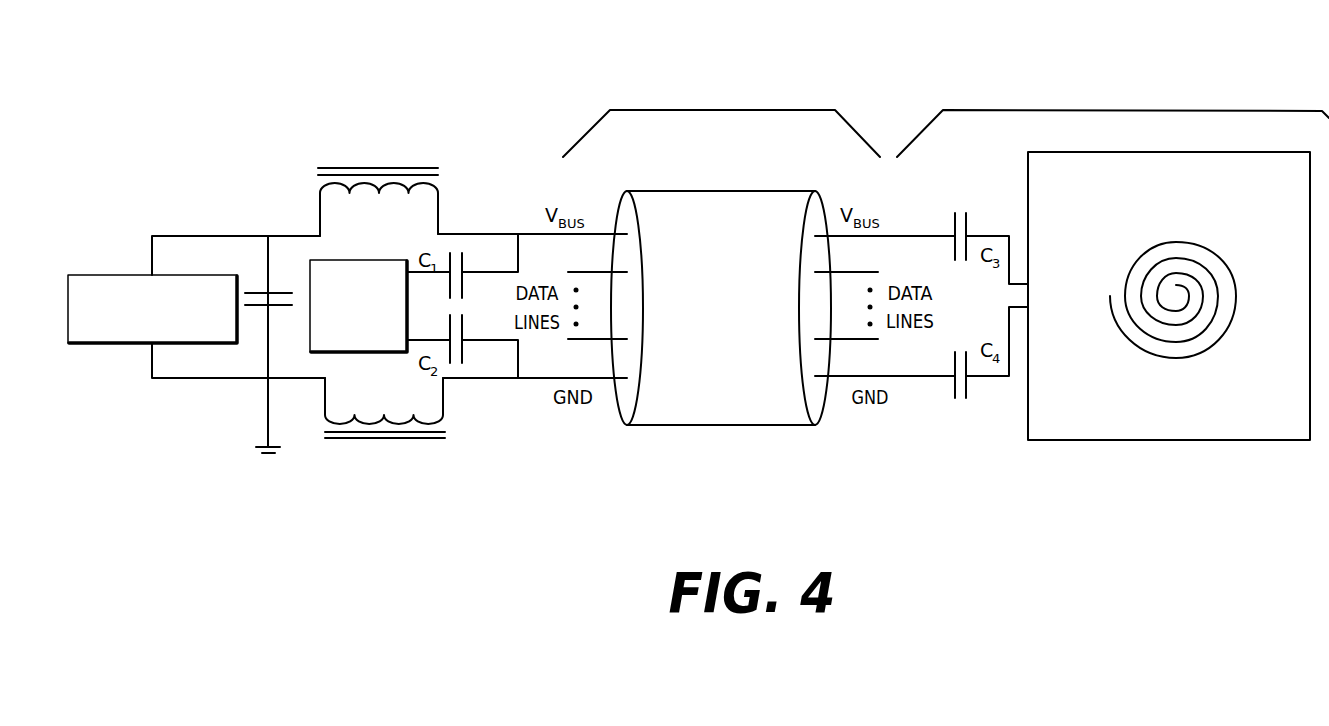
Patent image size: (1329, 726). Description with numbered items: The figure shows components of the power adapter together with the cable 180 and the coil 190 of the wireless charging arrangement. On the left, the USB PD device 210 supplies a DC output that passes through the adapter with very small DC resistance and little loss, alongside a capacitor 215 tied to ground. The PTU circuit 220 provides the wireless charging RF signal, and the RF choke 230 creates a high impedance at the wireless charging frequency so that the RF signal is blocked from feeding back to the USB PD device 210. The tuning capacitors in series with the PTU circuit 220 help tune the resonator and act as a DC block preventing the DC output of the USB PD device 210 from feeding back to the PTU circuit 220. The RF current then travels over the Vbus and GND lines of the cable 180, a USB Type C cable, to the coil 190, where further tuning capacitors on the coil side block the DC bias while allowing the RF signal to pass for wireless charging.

The USB PD device 210 is at (105, 345).
The capacitor 215 is at (255, 335).
The PTU circuit 220 is at (318, 258).
The RF choke 230 is at (393, 128).
The cable 180 is at (718, 110).
The coil 190 is at (1137, 110).